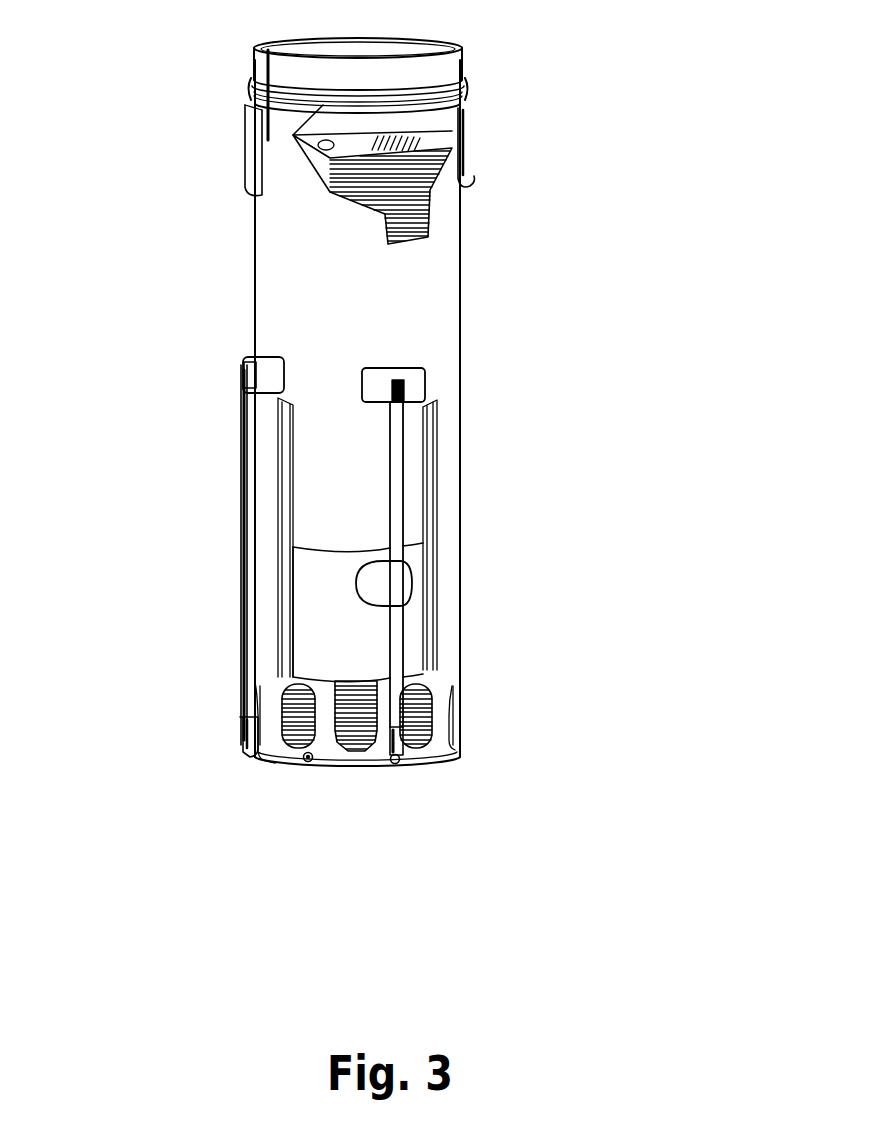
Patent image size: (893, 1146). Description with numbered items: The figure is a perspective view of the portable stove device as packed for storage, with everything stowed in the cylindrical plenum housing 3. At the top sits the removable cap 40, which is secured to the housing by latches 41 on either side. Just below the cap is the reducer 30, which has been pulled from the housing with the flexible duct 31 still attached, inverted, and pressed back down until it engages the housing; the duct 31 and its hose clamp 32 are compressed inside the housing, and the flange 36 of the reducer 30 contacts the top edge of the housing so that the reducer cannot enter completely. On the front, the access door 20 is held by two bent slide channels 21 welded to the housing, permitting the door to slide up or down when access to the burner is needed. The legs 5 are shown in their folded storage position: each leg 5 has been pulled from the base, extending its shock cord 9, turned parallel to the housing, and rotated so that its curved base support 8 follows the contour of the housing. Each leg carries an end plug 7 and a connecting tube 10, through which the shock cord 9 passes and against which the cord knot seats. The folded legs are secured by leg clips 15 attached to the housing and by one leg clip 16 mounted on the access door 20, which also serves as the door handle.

The housing 3 is at (305, 765).
The leg 5 is at (95, 435).
The end plug 7 is at (235, 380).
The curved base support 8 is at (255, 360).
The shock cord 9 is at (243, 750).
The connecting tube 10 is at (222, 724).
The leg clip 15 is at (220, 538).
The leg clip 16 is at (395, 586).
The access door 20 is at (358, 643).
The slide channel 21 is at (285, 480).
The reducer 30 is at (455, 104).
The duct 31 is at (430, 712).
The hose clamp 32 is at (455, 156).
The flange 36 is at (240, 82).
The removable cap 40 is at (443, 68).
The latch 41 is at (240, 121).